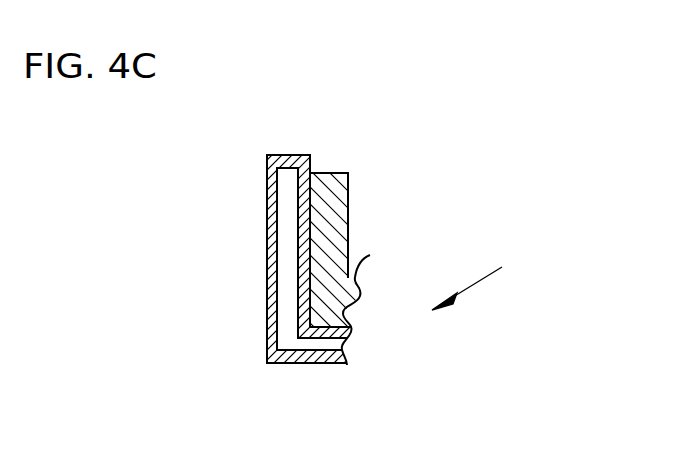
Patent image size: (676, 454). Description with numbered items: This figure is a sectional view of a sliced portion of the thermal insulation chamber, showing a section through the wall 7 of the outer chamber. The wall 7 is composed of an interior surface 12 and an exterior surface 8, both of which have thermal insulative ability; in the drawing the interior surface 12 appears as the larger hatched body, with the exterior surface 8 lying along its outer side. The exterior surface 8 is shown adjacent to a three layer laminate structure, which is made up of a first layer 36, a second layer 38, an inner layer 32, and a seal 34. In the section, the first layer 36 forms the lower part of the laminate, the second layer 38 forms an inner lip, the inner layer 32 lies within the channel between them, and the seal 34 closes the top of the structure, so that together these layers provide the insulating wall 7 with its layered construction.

The wall 7 is at (480, 277).
The exterior surface 8 is at (268, 312).
The interior surface 12 is at (335, 232).
The inner layer 32 is at (283, 208).
The seal 34 is at (300, 157).
The first layer 36 is at (277, 354).
The second layer 38 is at (302, 327).